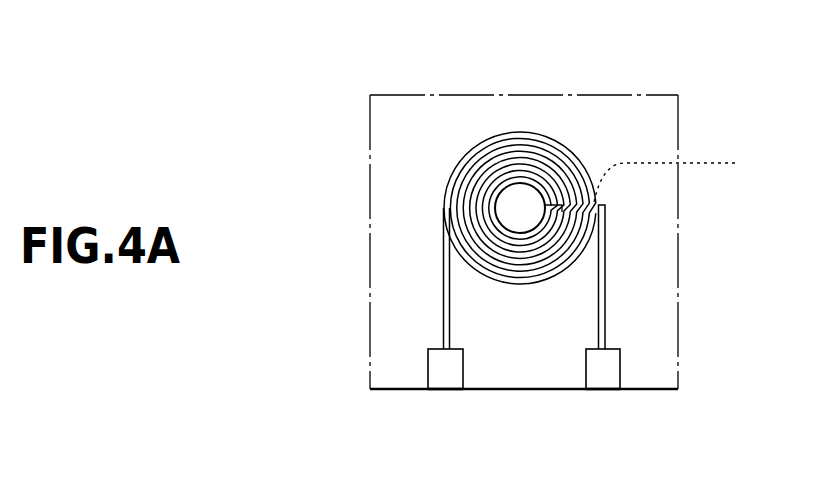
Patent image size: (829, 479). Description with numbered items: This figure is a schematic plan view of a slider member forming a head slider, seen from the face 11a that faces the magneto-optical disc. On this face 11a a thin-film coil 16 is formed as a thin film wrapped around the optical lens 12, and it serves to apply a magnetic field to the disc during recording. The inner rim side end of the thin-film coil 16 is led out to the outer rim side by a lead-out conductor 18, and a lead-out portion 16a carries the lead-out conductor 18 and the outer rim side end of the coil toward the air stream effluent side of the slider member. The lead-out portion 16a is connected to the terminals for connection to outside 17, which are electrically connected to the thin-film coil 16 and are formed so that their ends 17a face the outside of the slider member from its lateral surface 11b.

The face of the slider member facing the magneto-optical disc 11a is at (452, 107).
The lateral surface 11b is at (525, 393).
The optical lens 12 is at (495, 208).
The thin-film coil 16 is at (531, 137).
The lead-out portion 16a is at (442, 283).
The terminals for connection to outside 17 is at (437, 370).
The ends of the terminals 17a is at (442, 393).
The lead-out conductor 18 is at (679, 175).